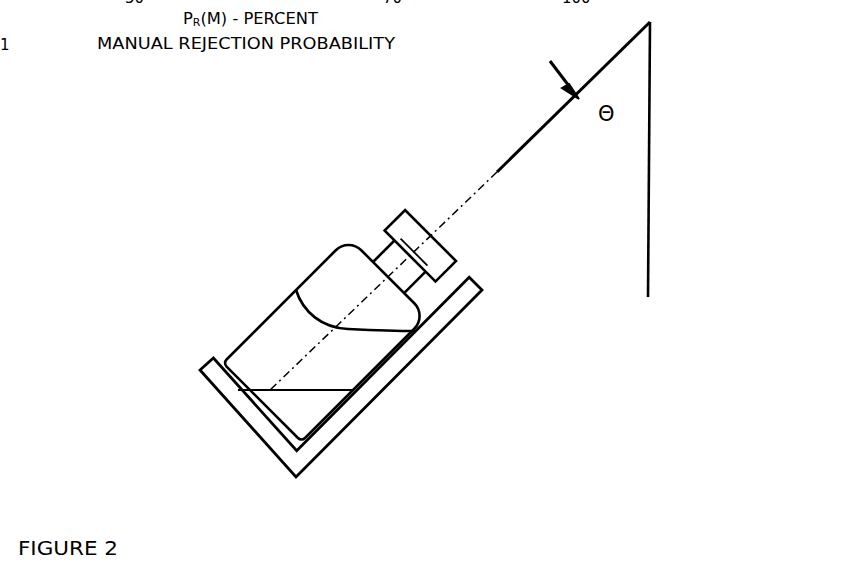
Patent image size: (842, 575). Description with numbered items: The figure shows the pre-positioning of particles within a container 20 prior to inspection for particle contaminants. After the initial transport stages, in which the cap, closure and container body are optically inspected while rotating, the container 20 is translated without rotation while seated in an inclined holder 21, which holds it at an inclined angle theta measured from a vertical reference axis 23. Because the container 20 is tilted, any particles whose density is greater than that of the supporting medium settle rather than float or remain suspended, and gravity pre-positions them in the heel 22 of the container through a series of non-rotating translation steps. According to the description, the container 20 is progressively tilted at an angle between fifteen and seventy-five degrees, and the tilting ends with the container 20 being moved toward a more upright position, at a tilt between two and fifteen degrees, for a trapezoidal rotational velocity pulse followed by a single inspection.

The container 20 is at (315, 262).
The inclined holder 21 is at (390, 394).
The heel of the container 22 is at (287, 425).
The vertical reference axis A 23 is at (664, 128).